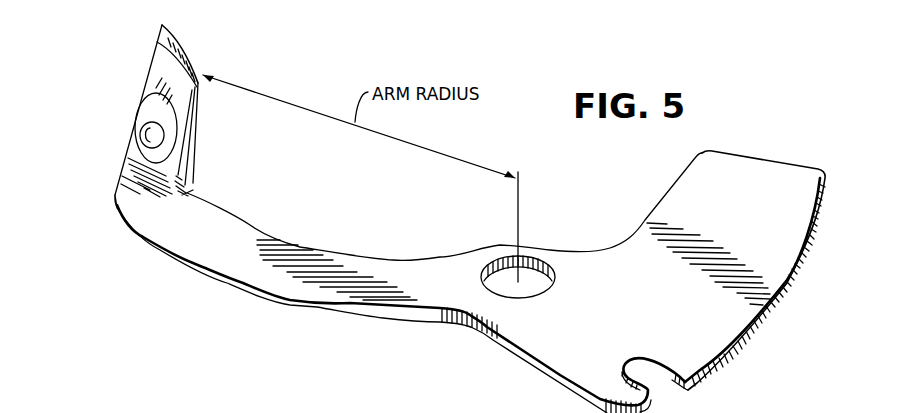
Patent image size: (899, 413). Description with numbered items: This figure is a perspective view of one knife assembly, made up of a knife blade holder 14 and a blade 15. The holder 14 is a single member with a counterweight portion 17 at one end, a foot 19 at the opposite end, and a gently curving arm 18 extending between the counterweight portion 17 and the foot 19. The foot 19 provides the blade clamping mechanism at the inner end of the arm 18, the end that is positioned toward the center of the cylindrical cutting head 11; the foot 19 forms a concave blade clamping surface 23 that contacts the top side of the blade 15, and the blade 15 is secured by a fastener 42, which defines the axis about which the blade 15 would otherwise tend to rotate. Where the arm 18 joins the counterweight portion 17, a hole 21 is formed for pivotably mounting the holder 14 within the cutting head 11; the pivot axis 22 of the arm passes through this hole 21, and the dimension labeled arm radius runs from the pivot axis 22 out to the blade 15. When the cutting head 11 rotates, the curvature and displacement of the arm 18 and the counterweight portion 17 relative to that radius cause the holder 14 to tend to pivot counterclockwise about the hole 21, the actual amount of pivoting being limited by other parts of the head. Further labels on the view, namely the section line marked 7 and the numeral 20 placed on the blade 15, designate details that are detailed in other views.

The section line 7- 7 is at (113, 128).
The cutting head 11 is at (172, 11).
The knife blade holder 14 is at (750, 345).
The blade 15 is at (165, 50).
The counterweight portion 17 is at (673, 187).
The arm 18 is at (318, 303).
The foot 19 is at (157, 83).
The blade side face 20 is at (197, 128).
The hole 21 is at (528, 260).
The pivot axis 22 is at (520, 203).
The concave blade clamping surface 23 is at (401, 304).
The fastener 42 is at (147, 148).